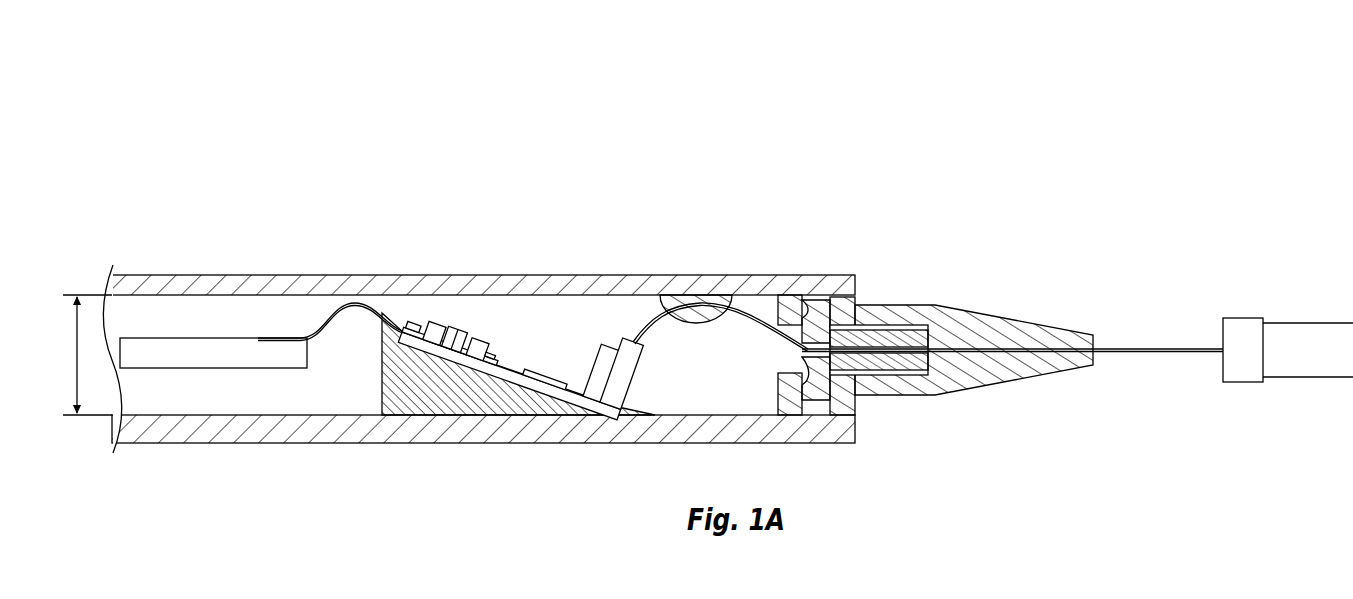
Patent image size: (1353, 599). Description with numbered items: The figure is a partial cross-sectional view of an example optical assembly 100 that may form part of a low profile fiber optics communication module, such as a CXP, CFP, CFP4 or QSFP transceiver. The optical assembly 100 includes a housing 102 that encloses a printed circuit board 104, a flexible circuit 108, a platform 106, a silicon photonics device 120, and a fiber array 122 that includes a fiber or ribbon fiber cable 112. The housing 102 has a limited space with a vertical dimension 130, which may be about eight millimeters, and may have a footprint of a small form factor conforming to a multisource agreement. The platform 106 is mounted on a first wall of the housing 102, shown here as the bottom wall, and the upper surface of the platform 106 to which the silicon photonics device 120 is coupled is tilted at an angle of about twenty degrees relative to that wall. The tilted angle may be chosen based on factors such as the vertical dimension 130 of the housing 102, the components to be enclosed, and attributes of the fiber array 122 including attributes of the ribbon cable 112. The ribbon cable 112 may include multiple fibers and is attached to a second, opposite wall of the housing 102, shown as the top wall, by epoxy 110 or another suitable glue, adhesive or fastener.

The optical assembly 100 is at (131, 95).
The housing 102 is at (425, 275).
The printed circuit board 104 is at (184, 369).
The platform 106 is at (382, 392).
The flexible circuit 108 is at (344, 301).
The epoxy 110 is at (705, 324).
The ribbon fiber cable 112 is at (748, 305).
The silicon photonics device 120 is at (514, 339).
The fiber array 122 is at (612, 329).
The vertical dimension 130 is at (87, 355).